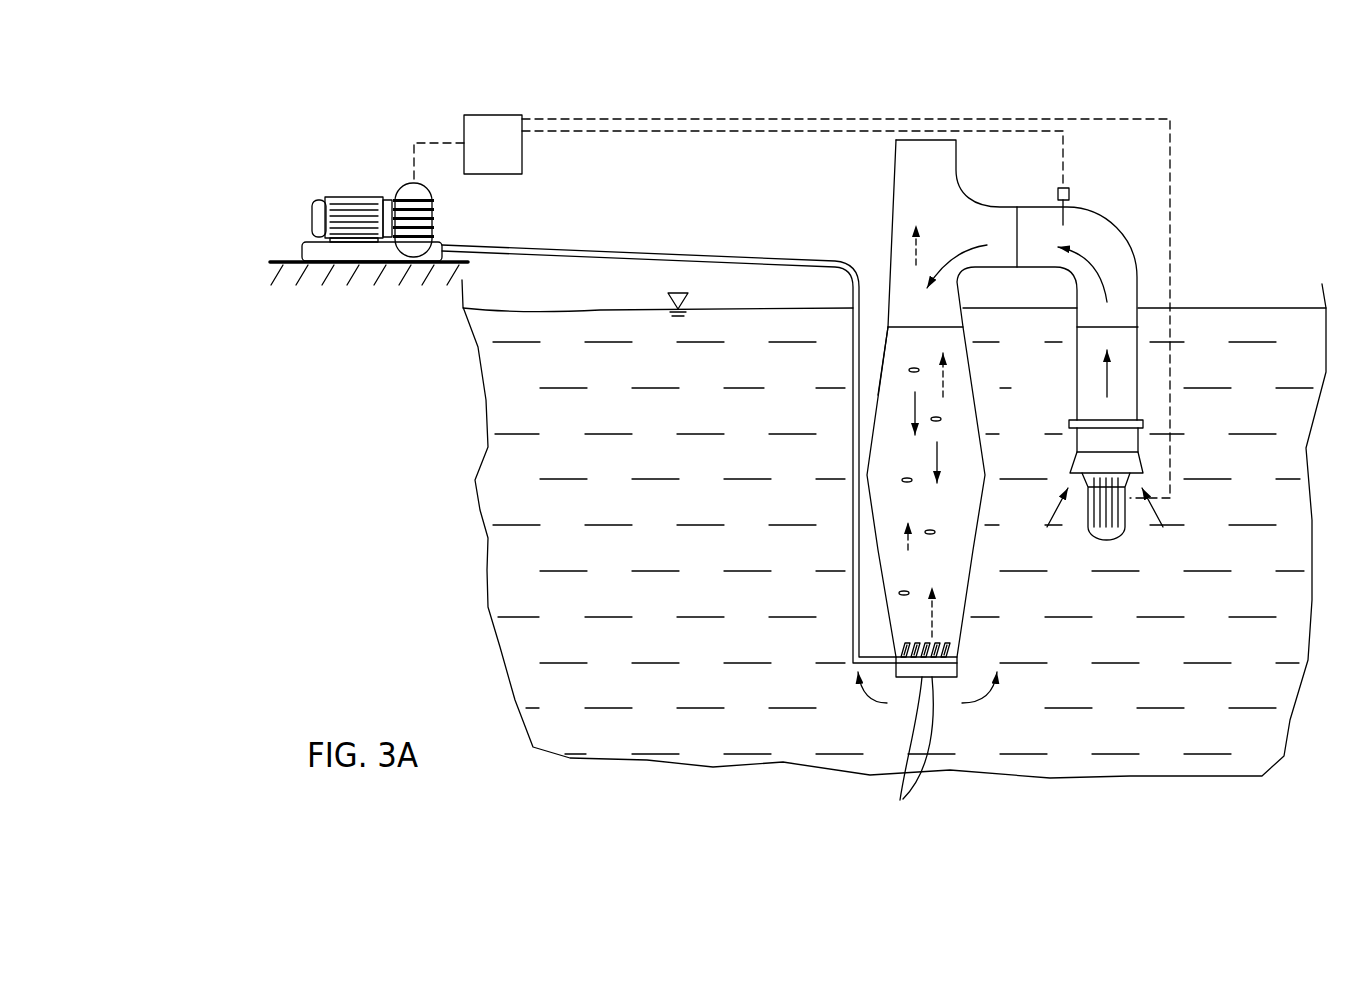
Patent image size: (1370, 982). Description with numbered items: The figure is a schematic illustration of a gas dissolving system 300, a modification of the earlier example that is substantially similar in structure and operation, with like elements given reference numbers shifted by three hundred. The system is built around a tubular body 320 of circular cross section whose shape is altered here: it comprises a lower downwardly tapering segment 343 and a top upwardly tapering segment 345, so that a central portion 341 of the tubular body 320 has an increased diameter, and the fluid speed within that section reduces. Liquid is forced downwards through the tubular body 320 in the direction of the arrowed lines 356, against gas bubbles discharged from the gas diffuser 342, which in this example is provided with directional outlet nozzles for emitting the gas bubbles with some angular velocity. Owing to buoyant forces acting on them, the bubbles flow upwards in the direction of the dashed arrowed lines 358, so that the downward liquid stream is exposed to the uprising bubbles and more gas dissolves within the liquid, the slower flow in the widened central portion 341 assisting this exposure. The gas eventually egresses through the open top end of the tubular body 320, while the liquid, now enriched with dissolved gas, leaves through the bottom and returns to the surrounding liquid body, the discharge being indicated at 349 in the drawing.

The gas dissolving system 300 is at (315, 88).
The tubular body 320 is at (873, 518).
The central portion 341 is at (892, 470).
The gas diffuser 342 is at (955, 651).
The lower downwardly tapering segment 343 is at (887, 625).
The top upwardly tapering segment 345 is at (878, 395).
The liquid discharge streams 349 is at (900, 800).
The arrowed lines 356 is at (915, 408).
The dashed arrowed lines 358 is at (945, 372).